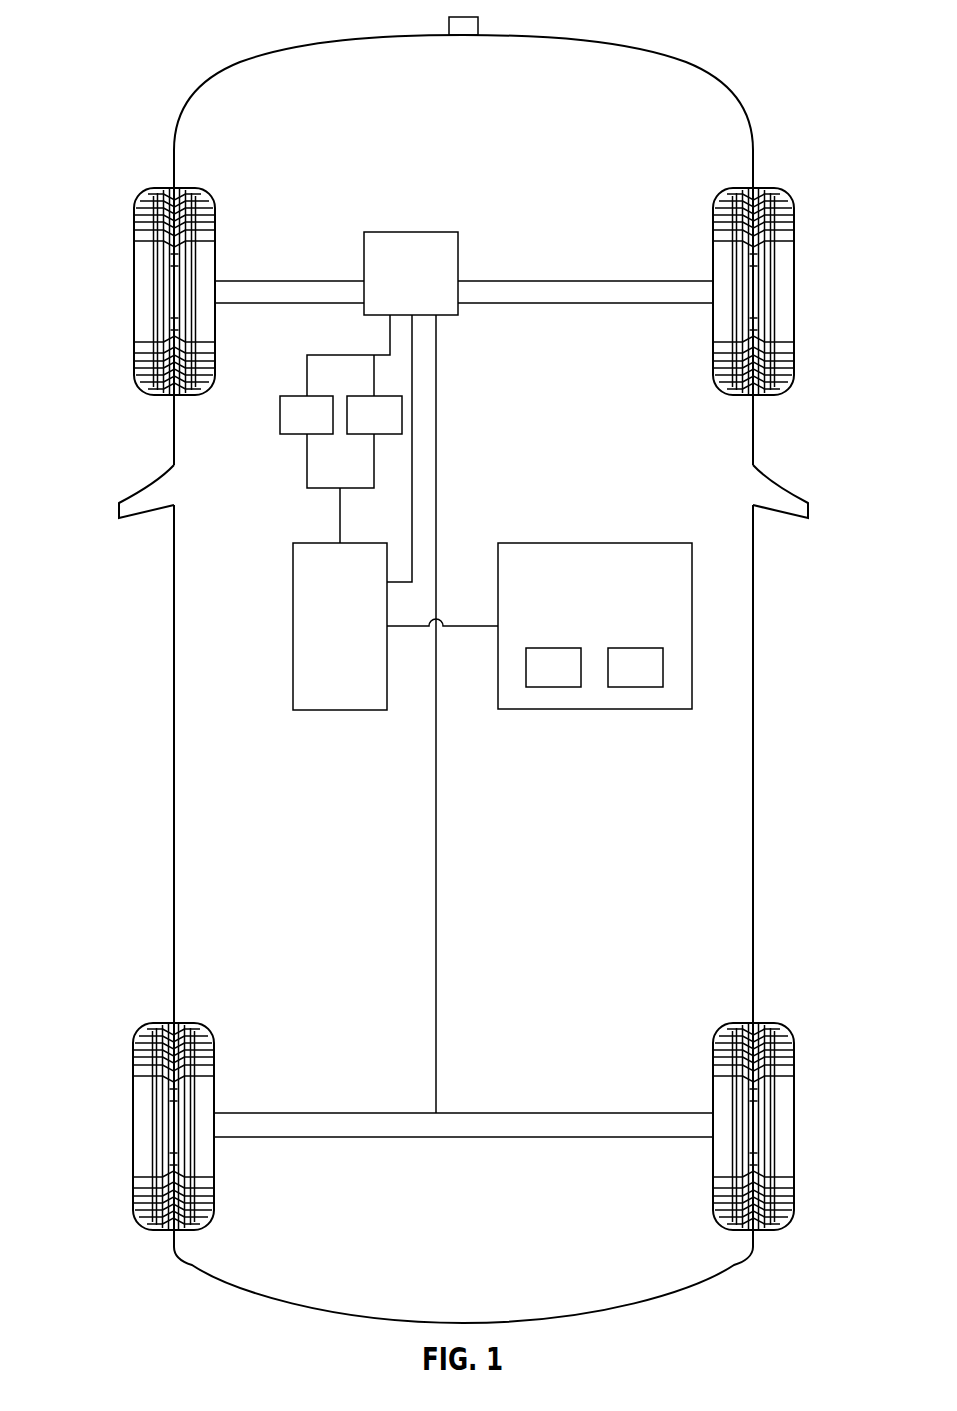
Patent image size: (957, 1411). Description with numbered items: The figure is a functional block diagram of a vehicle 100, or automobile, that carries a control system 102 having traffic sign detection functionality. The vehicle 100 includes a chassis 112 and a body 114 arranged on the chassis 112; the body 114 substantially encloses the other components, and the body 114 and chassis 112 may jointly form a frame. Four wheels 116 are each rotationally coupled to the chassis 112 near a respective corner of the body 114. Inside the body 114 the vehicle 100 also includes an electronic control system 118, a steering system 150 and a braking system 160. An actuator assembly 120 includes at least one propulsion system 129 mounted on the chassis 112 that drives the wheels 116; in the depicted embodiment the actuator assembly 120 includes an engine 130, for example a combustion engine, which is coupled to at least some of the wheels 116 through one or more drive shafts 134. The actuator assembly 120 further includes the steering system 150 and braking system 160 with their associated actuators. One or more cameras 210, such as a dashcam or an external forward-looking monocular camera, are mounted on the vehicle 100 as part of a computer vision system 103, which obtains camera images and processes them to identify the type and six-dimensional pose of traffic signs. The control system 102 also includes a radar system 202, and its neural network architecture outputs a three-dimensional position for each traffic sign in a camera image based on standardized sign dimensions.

The vehicle 100 is at (180, 58).
The control system 102 is at (615, 617).
The computer vision system 103 is at (574, 682).
The radar system 202 is at (656, 682).
The chassis 112 is at (436, 882).
The body 114 is at (174, 690).
The wheels 116 is at (131, 295).
The electronic control system 118 is at (360, 661).
The actuator assembly 120 is at (460, 346).
The propulsion system 129 is at (386, 232).
The engine 130 is at (431, 303).
The drive shafts 134 is at (272, 305).
The steering system 150 is at (327, 429).
The braking system 160 is at (395, 429).
The cameras 210 is at (478, 27).